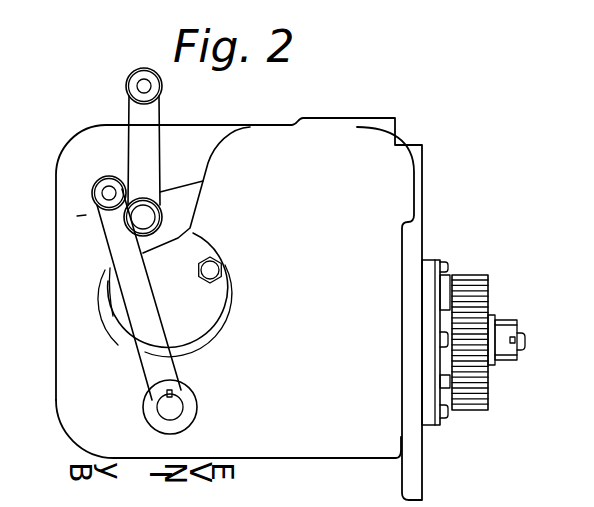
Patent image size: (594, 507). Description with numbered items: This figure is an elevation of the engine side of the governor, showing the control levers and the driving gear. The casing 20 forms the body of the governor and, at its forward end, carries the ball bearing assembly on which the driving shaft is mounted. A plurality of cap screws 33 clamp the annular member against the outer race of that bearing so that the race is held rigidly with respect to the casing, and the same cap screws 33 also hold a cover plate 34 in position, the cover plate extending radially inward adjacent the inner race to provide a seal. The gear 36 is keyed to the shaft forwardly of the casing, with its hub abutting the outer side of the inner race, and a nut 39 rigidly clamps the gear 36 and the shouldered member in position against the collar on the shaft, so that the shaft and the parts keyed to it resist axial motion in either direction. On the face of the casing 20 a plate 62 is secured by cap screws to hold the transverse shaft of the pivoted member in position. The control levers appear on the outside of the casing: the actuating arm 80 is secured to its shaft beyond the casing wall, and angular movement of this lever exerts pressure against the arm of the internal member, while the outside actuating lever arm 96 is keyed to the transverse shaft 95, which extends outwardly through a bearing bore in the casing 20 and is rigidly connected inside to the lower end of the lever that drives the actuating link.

The casing 20 is at (323, 445).
The cap screws 33 is at (446, 263).
The cover plate 34 is at (430, 427).
The gear 36 is at (482, 300).
The nut 39 is at (513, 322).
The plate 62 is at (203, 253).
The actuating arm 80 is at (148, 140).
The transverse shaft 95 is at (175, 407).
The outside actuating lever arm 96 is at (247, 395).